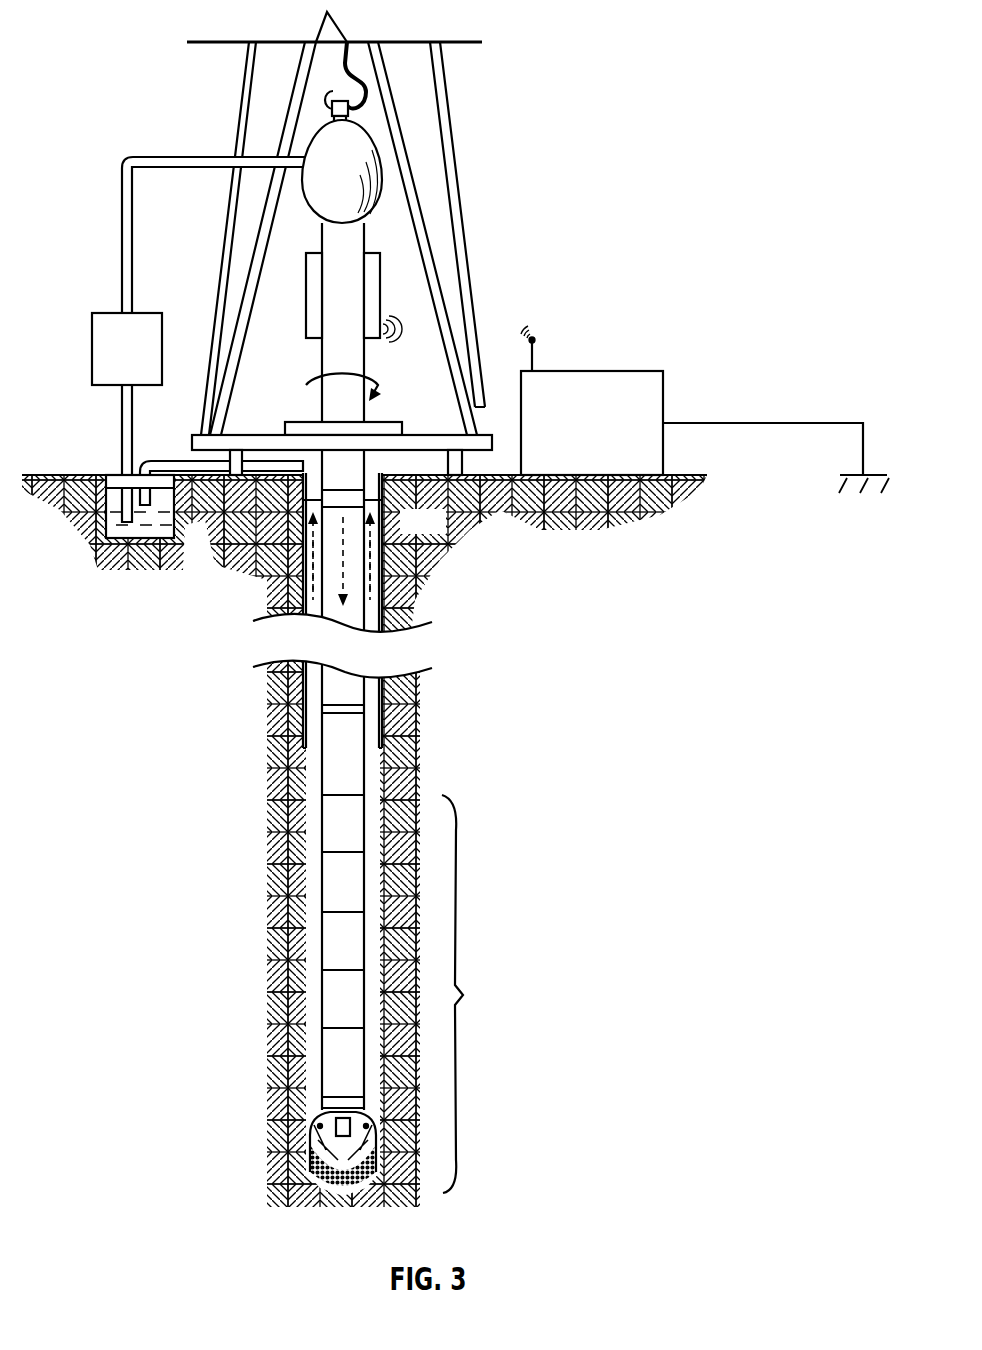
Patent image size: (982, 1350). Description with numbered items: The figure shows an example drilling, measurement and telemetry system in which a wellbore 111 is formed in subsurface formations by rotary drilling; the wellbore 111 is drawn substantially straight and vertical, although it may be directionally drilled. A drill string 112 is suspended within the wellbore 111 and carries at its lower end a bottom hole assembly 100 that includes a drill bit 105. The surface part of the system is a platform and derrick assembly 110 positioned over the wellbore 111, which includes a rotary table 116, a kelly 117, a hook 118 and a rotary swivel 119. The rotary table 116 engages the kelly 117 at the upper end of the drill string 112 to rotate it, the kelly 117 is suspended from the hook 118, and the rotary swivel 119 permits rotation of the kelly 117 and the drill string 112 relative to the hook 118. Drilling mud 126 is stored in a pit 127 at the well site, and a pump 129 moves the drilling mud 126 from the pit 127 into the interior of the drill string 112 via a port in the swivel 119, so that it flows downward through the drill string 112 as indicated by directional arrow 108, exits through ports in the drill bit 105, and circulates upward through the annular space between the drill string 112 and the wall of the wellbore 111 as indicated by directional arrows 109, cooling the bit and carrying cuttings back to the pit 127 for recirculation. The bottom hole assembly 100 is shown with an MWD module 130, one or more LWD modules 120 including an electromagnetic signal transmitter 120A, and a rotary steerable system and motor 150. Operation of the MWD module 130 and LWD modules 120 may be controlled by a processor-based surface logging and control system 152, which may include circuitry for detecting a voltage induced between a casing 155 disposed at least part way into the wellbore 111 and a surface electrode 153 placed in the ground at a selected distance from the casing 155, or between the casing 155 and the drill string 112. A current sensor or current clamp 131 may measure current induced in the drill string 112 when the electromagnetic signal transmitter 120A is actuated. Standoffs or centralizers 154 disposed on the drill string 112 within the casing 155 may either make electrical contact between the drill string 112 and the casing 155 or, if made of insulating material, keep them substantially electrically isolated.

The bottom hole assembly 100 is at (479, 994).
The drill bit 105 is at (312, 1150).
The directional arrow 108 is at (343, 573).
The directional arrows 109 is at (312, 550).
The platform and derrick assembly 110 is at (467, 113).
The wellbore 111 is at (373, 483).
The drill string 112 is at (343, 476).
The rotary table 116 is at (383, 427).
The kelly 117 is at (325, 412).
The hook 118 is at (343, 65).
The rotary swivel 119 is at (312, 205).
The LWD module 120 is at (330, 882).
The electromagnetic signal transmitter 120A is at (330, 1000).
The drilling mud 126 is at (138, 532).
The pit 127 is at (114, 476).
The pump 129 is at (105, 385).
The MWD module 130 is at (330, 942).
The current sensor or current clamp 131 is at (380, 283).
The rotary steerable system and motor 150 is at (330, 1063).
The surface logging and control system 152 is at (603, 371).
The surface electrode 153 is at (855, 475).
The standoffs or centralizers 154 is at (391, 520).
The casing 155 is at (383, 718).